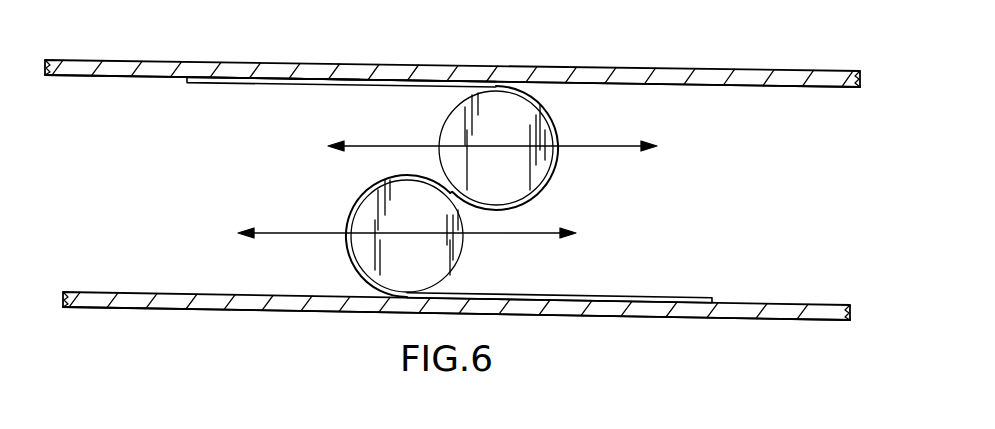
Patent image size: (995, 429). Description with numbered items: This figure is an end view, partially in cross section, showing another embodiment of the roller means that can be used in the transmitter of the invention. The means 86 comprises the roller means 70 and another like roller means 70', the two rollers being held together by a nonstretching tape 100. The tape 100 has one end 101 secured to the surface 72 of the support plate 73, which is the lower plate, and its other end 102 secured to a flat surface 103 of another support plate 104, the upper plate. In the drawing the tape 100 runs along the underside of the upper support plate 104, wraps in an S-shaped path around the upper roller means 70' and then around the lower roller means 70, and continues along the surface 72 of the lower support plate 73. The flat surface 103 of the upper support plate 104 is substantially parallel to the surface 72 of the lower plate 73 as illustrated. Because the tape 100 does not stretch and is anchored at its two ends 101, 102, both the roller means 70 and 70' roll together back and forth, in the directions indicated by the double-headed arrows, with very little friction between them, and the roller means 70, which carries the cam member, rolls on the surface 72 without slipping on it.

The roller means 70 is at (431, 236).
The like roller means 70' is at (507, 116).
The surface of the support plate 72 is at (803, 303).
The support plate 73 is at (769, 319).
The means 86 is at (640, 60).
The nonstretching tape 100 is at (323, 85).
The one end of the tape 101 is at (708, 294).
The other end of the tape 102 is at (193, 85).
The flat surface 103 is at (108, 77).
The another support plate 104 is at (798, 73).